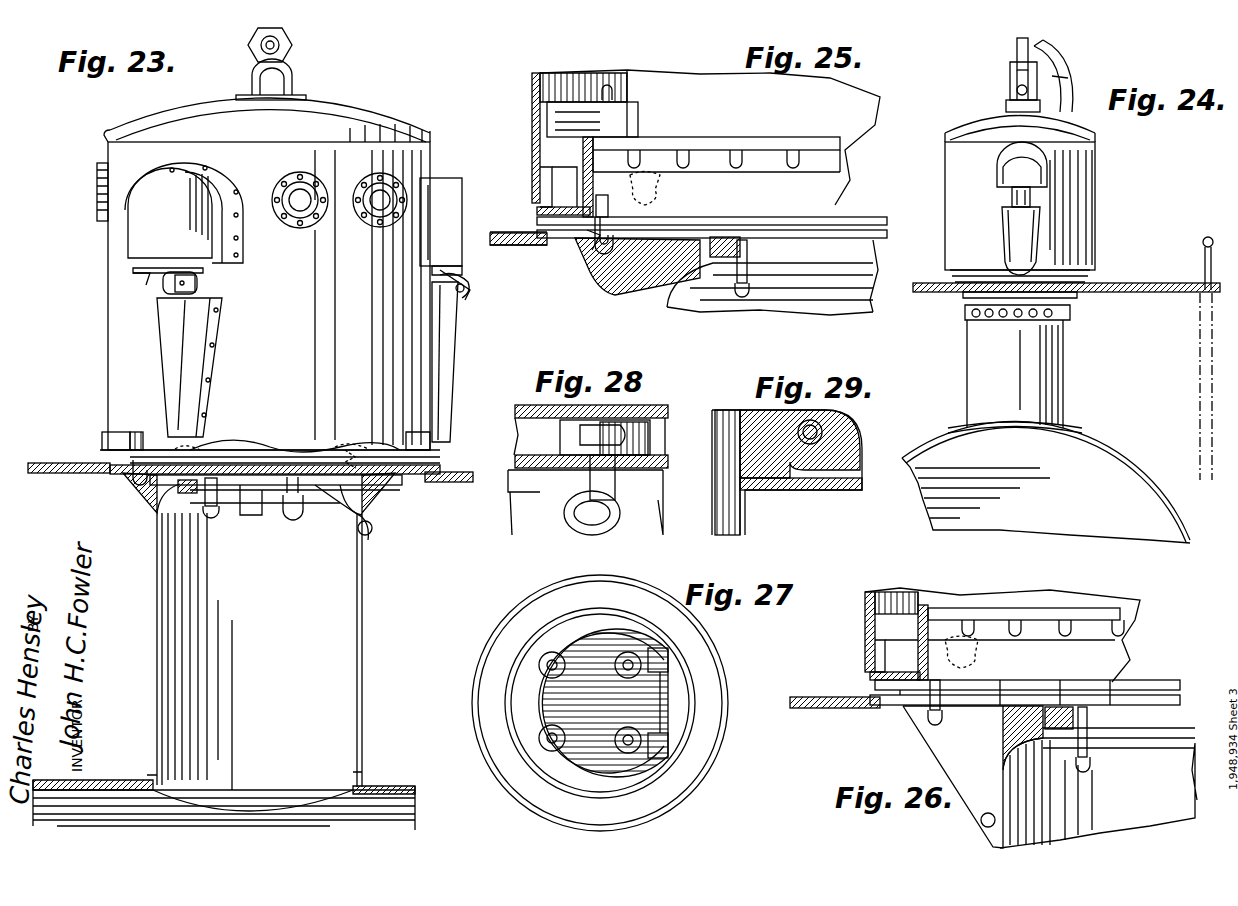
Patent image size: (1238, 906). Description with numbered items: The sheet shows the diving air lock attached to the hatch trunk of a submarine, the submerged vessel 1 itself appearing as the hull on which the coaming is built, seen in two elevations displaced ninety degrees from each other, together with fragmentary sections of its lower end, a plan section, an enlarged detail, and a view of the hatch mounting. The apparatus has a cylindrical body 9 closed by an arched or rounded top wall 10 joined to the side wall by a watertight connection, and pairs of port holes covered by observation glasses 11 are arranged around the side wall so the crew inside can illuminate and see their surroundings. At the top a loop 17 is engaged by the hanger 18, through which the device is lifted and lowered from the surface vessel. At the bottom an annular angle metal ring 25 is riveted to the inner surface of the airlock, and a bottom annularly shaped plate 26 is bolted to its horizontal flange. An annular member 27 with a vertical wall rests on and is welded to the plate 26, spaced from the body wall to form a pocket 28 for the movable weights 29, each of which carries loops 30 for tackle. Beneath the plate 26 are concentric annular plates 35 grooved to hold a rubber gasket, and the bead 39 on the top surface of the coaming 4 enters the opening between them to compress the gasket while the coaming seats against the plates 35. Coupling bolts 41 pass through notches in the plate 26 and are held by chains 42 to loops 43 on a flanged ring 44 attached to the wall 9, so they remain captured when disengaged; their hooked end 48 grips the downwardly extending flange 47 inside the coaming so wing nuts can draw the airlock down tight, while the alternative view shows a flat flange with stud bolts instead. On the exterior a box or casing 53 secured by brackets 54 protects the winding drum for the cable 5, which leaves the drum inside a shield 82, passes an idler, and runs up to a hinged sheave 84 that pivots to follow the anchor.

In FIG. 23, the hull / vessel body 1 is at (380, 775).
In FIG. 24, the hull / vessel body 1 is at (1110, 462).
In FIG. 25, the coaming 4 is at (600, 268).
In FIG. 24, the coaming 4 is at (1070, 300).
In FIG. 26, the coaming 4 is at (932, 742).
In FIG. 23, the cable 5 is at (141, 282).
In FIG. 23, the cylindrical body 9 is at (263, 296).
In FIG. 25, the cylindrical body 9 is at (532, 100).
In FIG. 24, the cylindrical body 9 is at (1097, 240).
In FIG. 26, the cylindrical body 9 is at (865, 618).
In FIG. 23, the arched or rounded top wall 10 is at (267, 118).
In FIG. 24, the arched or rounded top wall 10 is at (998, 115).
In FIG. 23, the observation glasses 11 is at (298, 198).
In FIG. 23, the loop 17 is at (296, 80).
In FIG. 23, the hanger 18 is at (292, 47).
In FIG. 24, the hanger 18 is at (1015, 46).
In FIG. 23, the annular angle metal ring 25 is at (114, 445).
In FIG. 25, the annular angle metal ring 25 is at (540, 210).
In FIG. 26, the annular angle metal ring 25 is at (870, 675).
In FIG. 26, the bottom annularly shaped plate 26 is at (873, 686).
In FIG. 23, the annular member 27 is at (440, 484).
In FIG. 25, the annular member 27 is at (583, 140).
In FIG. 26, the annular member 27 is at (922, 605).
In FIG. 27, the pocket 28 is at (478, 580).
In FIG. 25, the movable weights 29 is at (635, 125).
In FIG. 25, the loops 30 is at (614, 97).
In FIG. 23, the annular plates 35 is at (447, 484).
In FIG. 25, the annular plates 35 is at (540, 246).
In FIG. 26, the annular plates 35 is at (880, 702).
In FIG. 25, the bead 39 is at (590, 248).
In FIG. 26, the bead 39 is at (905, 710).
In FIG. 23, the coupling bolts 41 is at (355, 447).
In FIG. 23, the chains 42 is at (190, 449).
In FIG. 25, the chains 42 is at (645, 189).
In FIG. 26, the chains 42 is at (985, 640).
In FIG. 25, the loops 43 is at (738, 158).
In FIG. 26, the loops 43 is at (1080, 637).
In FIG. 25, the flanged ring 44 is at (778, 148).
In FIG. 26, the flanged ring 44 is at (1090, 608).
In FIG. 23, the downwardly extending flange or bead 47 is at (387, 490).
In FIG. 23, the hooked end 48 is at (370, 498).
In FIG. 25, the hooked end 48 is at (608, 260).
In FIG. 23, the box or casing 53 is at (295, 217).
In FIG. 24, the box or casing 53 is at (1022, 164).
In FIG. 23, the brackets 54 is at (233, 262).
In FIG. 24, the brackets 54 is at (997, 178).
In FIG. 23, the shield 82 is at (172, 362).
In FIG. 24, the shield 82 is at (1020, 240).
In FIG. 23, the sheave 84 is at (166, 292).